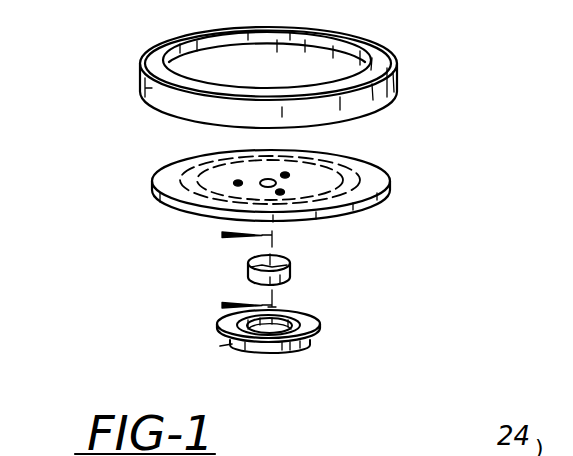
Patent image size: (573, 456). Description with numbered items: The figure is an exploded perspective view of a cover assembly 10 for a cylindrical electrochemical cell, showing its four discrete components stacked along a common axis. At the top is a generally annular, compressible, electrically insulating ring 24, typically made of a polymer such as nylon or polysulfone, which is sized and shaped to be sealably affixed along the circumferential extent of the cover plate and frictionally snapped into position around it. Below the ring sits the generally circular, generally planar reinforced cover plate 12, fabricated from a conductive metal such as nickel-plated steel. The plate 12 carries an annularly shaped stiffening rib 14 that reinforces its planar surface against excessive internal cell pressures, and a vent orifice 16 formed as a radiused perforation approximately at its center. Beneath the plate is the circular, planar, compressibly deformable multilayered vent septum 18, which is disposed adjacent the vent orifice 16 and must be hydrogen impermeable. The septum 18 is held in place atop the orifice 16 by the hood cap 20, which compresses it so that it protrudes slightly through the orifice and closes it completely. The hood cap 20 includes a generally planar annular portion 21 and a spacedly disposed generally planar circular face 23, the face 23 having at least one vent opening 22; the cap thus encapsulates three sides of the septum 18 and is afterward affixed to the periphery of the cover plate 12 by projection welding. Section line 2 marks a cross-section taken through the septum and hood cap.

The cover assembly 10 is at (412, 93).
The insulating ring 24 is at (141, 86).
The cover plate 12 is at (367, 195).
The stiffening rib 14 is at (360, 178).
The vent orifice 16 is at (265, 182).
The section line 2- 2 is at (260, 267).
The vent septum 18 is at (290, 267).
The hood cap 20 is at (290, 352).
The annular portion 21 is at (313, 327).
The vent opening 22 is at (270, 349).
The circular face 23 is at (220, 347).